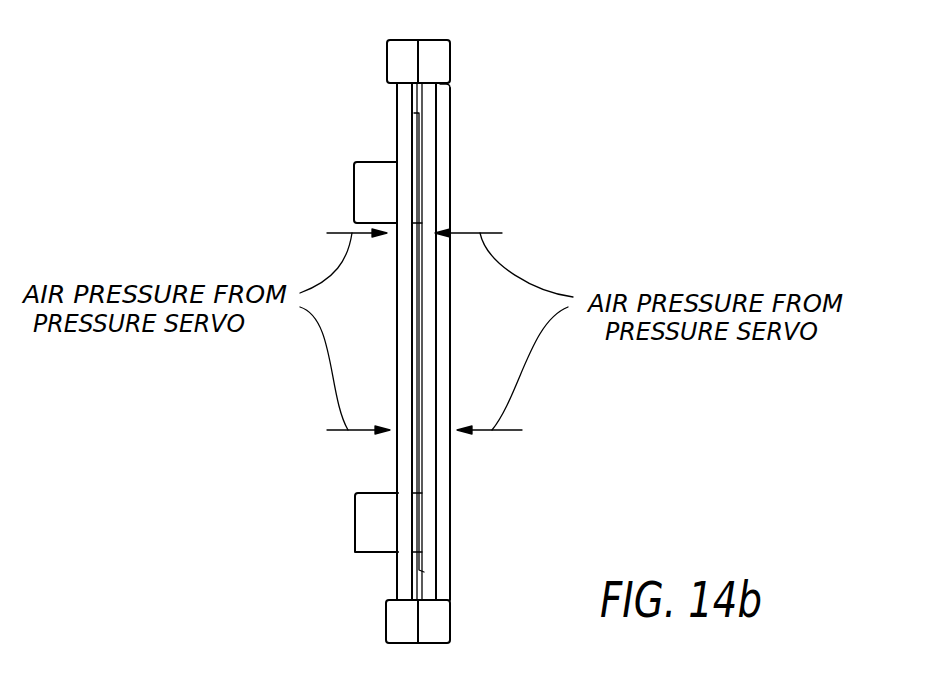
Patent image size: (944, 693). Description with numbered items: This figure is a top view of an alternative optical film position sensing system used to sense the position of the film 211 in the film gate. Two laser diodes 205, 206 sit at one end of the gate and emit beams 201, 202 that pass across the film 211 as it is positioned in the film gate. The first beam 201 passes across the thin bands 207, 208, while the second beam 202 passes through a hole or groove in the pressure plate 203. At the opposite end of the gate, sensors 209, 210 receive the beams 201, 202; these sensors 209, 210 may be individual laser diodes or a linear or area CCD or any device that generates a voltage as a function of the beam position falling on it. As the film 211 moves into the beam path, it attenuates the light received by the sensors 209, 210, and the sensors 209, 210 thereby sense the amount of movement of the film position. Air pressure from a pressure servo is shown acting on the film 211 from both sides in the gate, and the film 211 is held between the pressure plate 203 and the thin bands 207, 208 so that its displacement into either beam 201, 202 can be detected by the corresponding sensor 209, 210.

The beam 201 is at (398, 468).
The beam 202 is at (432, 463).
The pressure plate 203 is at (452, 156).
The laser diode 205 is at (387, 52).
The laser diode 206 is at (450, 52).
The thin band 207 is at (353, 167).
The thin band 208 is at (368, 528).
The sensor 209 is at (402, 625).
The sensor 210 is at (442, 625).
The film 211 is at (420, 123).